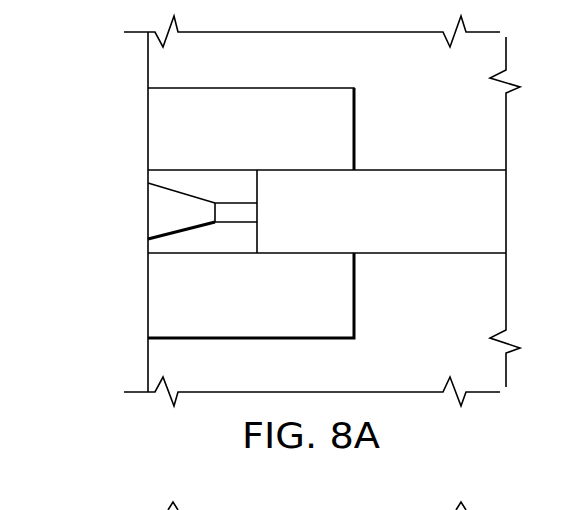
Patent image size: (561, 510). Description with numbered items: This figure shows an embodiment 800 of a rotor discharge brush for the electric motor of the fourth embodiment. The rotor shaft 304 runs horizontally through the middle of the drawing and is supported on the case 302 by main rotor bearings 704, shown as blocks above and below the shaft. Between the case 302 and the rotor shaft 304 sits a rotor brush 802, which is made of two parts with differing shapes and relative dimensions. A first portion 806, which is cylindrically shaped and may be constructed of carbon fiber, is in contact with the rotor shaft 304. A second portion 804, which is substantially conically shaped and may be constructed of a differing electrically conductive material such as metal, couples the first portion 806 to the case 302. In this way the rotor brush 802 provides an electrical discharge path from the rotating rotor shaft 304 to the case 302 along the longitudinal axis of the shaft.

The embodiment 800 is at (117, 131).
The case 302 is at (148, 353).
The rotor shaft 304 is at (440, 239).
The main rotor bearing 704 is at (230, 142).
The rotor brush 802 is at (139, 223).
The second portion 804 is at (150, 212).
The first portion 806 is at (247, 212).